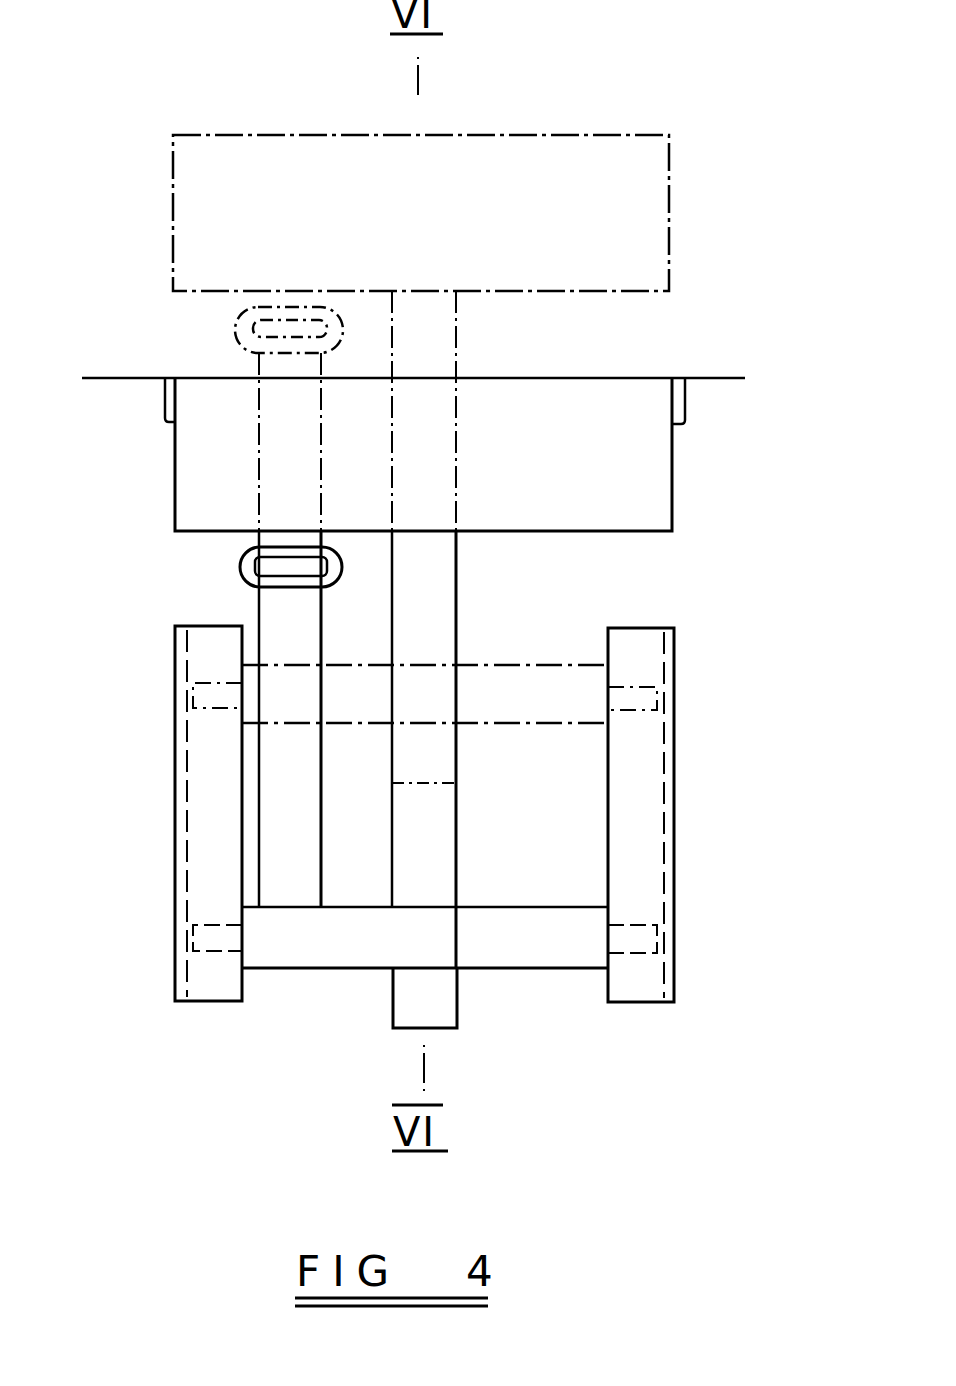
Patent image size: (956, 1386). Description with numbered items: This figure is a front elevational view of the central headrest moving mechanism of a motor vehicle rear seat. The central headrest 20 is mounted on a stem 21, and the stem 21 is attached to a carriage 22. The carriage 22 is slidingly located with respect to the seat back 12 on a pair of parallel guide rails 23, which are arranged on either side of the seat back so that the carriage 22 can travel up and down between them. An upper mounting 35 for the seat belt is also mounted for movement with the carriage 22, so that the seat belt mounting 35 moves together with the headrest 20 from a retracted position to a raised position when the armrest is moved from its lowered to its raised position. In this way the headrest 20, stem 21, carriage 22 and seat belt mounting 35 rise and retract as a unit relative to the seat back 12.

The seat back 12 is at (715, 402).
The central headrest 20 is at (655, 213).
The stem 21 is at (435, 310).
The carriage 22 is at (555, 695).
The guide rails 23 is at (203, 748).
The upper mounting 35 is at (235, 335).